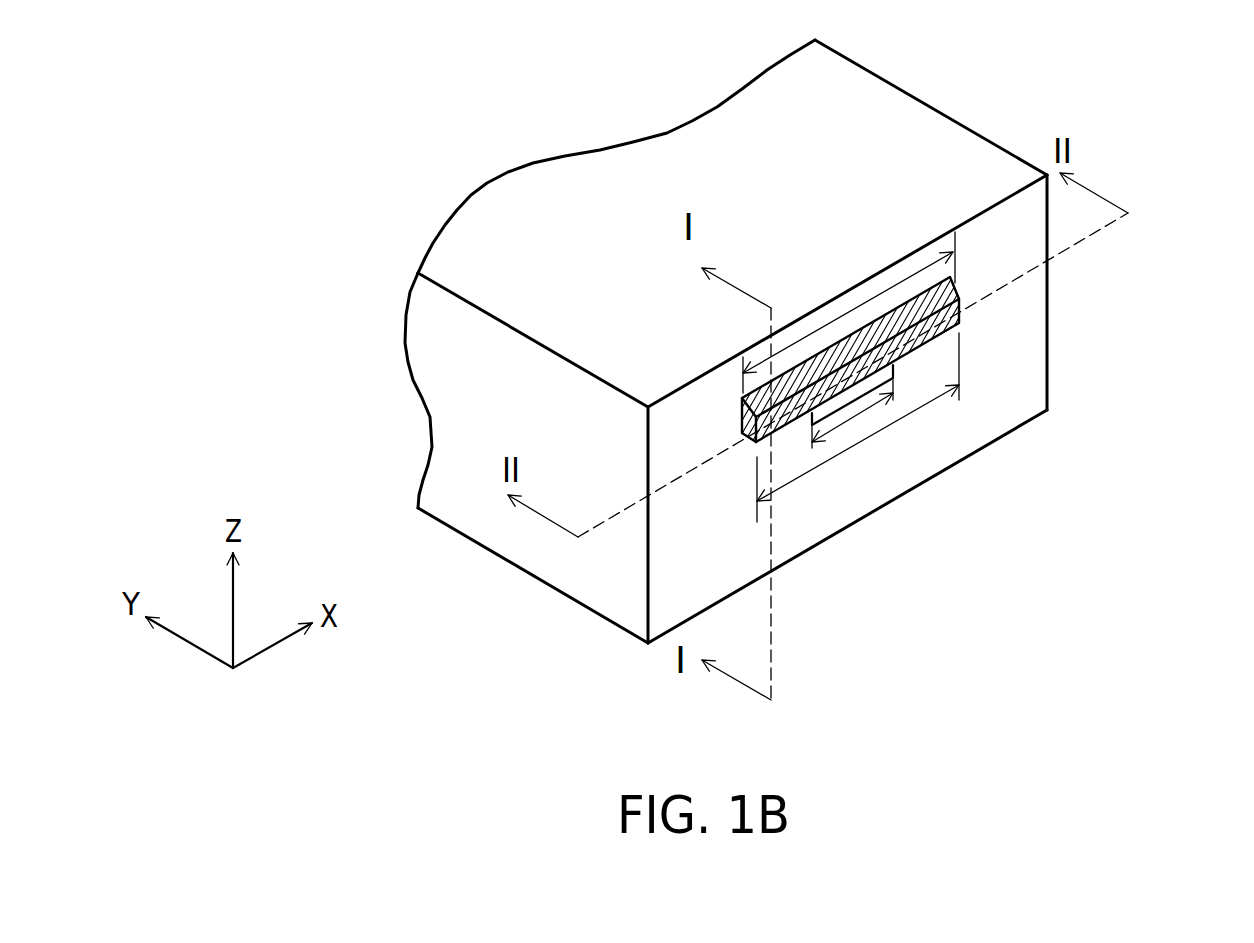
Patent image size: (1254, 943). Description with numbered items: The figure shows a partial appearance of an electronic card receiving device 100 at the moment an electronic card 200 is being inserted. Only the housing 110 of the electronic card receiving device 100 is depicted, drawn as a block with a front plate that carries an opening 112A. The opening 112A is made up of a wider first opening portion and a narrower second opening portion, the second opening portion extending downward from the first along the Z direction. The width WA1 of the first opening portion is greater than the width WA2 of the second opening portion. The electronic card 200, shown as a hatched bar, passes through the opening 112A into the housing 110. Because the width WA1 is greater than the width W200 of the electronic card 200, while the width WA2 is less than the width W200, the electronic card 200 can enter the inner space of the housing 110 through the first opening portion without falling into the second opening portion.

The electronic card receiving device 100 is at (1215, 587).
The housing 110 is at (968, 85).
The electronic card 200 is at (960, 330).
The opening 112A is at (736, 426).
The width of the first opening portion WA1 is at (853, 309).
The width of the second opening portion WA2 is at (857, 415).
The width of the electronic card W200 is at (930, 403).